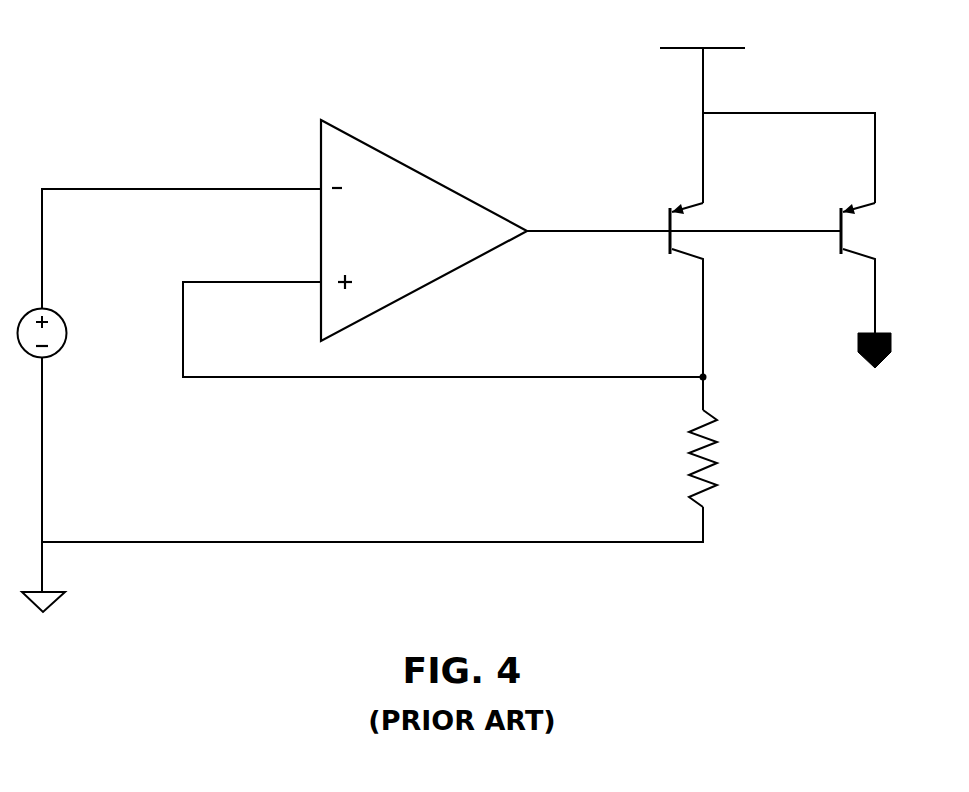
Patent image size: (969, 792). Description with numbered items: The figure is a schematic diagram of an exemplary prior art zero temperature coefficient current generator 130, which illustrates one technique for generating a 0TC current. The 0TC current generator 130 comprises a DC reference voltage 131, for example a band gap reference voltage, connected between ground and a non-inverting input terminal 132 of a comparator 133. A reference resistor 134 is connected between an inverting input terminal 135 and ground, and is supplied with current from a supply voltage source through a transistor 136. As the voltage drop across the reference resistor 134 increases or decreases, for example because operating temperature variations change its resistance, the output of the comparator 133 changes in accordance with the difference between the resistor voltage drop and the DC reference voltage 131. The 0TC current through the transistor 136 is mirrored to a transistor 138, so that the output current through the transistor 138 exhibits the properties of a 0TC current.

The 0TC current generator 130 is at (132, 125).
The DC reference voltage 131 is at (67, 333).
The non-inverting input terminal 132 is at (319, 186).
The comparator 133 is at (415, 168).
The reference resistor 134 is at (662, 449).
The inverting input terminal 135 is at (319, 280).
The transistor 136 is at (667, 188).
The transistor 138 is at (843, 188).